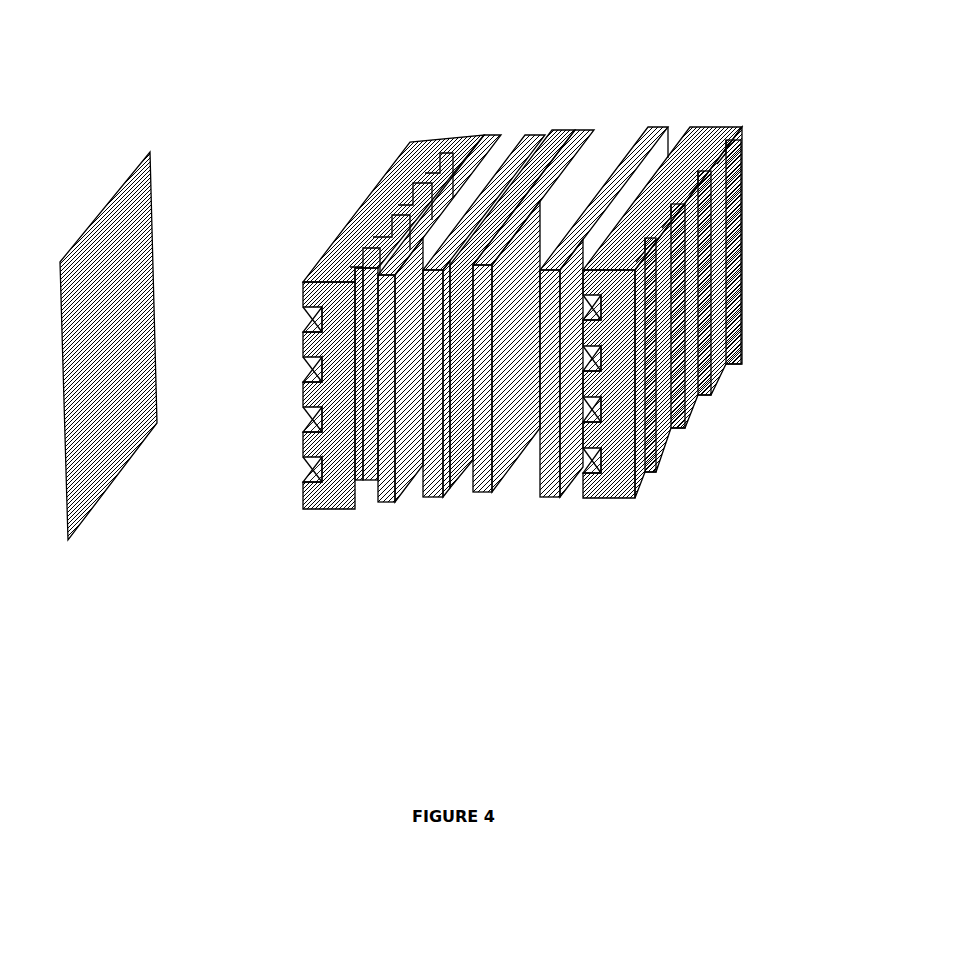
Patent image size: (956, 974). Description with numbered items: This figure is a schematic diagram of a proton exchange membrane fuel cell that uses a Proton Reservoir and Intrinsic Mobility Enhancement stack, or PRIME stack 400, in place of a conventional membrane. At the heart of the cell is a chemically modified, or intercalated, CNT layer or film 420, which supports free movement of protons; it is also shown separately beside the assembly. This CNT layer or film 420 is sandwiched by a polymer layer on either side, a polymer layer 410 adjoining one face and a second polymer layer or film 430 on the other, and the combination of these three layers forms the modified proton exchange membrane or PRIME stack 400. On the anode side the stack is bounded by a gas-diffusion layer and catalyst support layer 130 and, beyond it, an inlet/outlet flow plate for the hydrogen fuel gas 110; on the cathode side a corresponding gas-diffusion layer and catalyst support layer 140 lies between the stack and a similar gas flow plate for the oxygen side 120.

The inlet/outlet flow plate for the hydrogen fuel gas 110 is at (386, 176).
The gas flow plate for the oxygen side 120 is at (750, 160).
The gas-diffusion layer and catalyst support layer for the anode side 130 is at (476, 143).
The gas-diffusion layer and catalyst support layer for the cathode side 140 is at (676, 126).
The PRIME stack 400 is at (524, 344).
The polymer layer 410 is at (431, 507).
The chemically modified or intercalated CNT layer or film 420 is at (110, 183).
The second polymer layer or film 430 is at (495, 502).